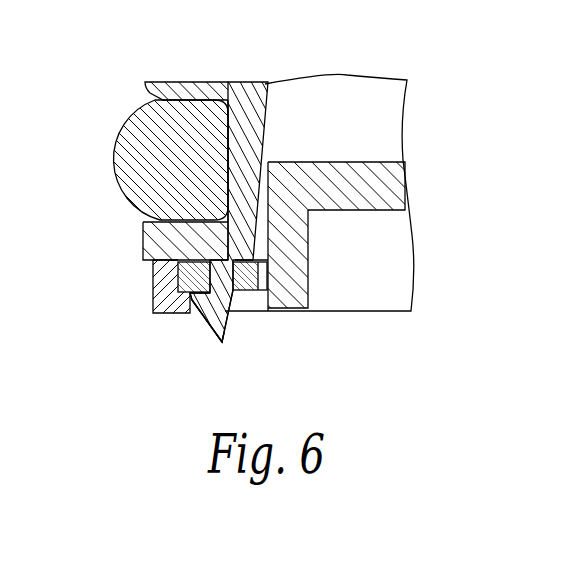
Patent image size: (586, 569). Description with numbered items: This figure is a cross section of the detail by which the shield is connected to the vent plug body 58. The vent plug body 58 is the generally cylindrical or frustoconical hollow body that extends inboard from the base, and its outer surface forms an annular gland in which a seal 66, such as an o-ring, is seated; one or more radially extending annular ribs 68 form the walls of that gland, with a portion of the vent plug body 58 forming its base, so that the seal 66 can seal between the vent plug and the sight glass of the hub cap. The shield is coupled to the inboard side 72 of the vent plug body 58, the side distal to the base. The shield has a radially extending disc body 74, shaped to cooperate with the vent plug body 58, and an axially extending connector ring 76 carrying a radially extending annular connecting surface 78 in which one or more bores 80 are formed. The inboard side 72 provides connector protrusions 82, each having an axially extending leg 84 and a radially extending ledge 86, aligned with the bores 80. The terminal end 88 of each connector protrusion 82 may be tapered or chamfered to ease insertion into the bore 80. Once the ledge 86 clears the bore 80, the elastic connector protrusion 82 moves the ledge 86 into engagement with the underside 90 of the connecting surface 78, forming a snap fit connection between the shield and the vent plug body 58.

The vent plug body 58 is at (248, 102).
The seal 66 is at (128, 147).
The annular rib 68 is at (165, 83).
The inboard side 72 is at (134, 322).
The disc body 74 is at (385, 185).
The connector ring 76 is at (300, 225).
The annular connecting surface 78 is at (253, 300).
The bore 80 is at (245, 285).
The connector protrusion 82 is at (185, 275).
The axially extending leg 84 is at (228, 313).
The radially extending ledge 86 is at (197, 313).
The terminal end 88 is at (217, 352).
The underside 90 is at (165, 312).